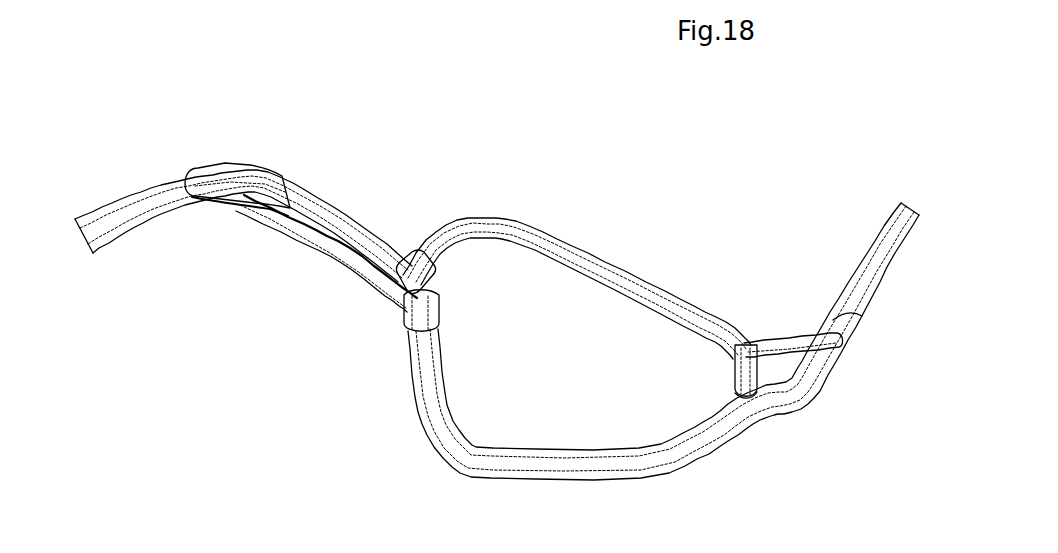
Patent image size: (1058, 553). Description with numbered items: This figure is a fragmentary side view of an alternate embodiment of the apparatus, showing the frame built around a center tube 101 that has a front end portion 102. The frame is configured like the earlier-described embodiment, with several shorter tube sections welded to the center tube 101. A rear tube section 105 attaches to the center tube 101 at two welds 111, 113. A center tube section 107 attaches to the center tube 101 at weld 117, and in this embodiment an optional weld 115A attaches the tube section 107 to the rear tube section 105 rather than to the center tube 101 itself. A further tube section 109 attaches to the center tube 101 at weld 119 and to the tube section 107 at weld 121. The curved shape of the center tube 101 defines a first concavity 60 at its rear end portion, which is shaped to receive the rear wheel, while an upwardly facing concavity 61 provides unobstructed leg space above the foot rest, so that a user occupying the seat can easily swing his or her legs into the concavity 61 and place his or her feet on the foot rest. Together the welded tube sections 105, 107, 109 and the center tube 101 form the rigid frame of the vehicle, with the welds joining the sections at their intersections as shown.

The first concavity 60 is at (279, 298).
The concavity 61 is at (575, 369).
The center tube 101 is at (152, 214).
The front end portion 102 is at (908, 202).
The tube section 105 is at (323, 233).
The tube section 107 is at (603, 267).
The tube section 109 is at (777, 337).
The weld 111 is at (177, 181).
The weld 113 is at (412, 348).
The weld 115A is at (430, 275).
The weld 117 is at (748, 394).
The weld 119 is at (853, 313).
The weld 121 is at (737, 357).